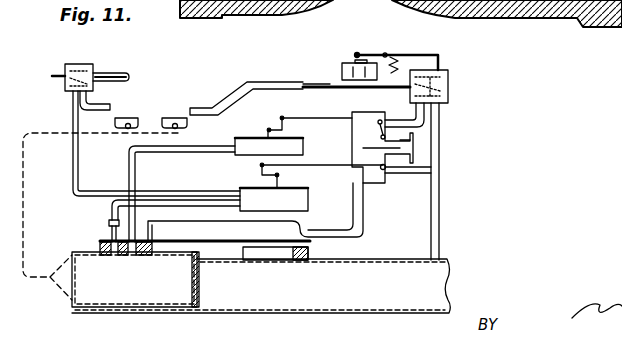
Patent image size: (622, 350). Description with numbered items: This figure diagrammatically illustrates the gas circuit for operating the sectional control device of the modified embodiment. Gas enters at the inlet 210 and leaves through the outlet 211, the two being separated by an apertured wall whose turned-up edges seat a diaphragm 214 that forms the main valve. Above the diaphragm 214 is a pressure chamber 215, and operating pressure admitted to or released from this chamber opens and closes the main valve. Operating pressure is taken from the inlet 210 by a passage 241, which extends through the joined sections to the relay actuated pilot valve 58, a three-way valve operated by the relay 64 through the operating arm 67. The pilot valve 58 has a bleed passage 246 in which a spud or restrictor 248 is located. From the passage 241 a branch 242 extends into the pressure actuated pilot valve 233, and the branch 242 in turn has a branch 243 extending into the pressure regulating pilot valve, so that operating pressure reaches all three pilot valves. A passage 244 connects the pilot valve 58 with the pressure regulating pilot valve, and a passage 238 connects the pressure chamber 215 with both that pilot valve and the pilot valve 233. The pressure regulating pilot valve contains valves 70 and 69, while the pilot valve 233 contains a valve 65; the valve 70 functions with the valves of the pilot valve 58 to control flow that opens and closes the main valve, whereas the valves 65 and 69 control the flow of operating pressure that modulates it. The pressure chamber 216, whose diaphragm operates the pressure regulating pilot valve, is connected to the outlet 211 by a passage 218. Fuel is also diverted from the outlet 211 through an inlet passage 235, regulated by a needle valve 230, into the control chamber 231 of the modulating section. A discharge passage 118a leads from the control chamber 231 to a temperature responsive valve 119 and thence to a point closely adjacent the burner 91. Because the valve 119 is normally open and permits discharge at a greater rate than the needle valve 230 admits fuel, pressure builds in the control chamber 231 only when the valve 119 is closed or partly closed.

The temperature responsive valve 119 is at (72, 64).
The burner 91 is at (170, 117).
The spud or restrictor 248 is at (303, 82).
The bleed passage 246 is at (327, 85).
The relay 64 is at (352, 62).
The operating arm 67 is at (403, 53).
The pilot valve 58 is at (455, 87).
The passage 244 is at (398, 118).
The passage 241 is at (441, 214).
The valve 70 is at (373, 114).
The branch 242 is at (356, 114).
The valve 69 is at (380, 128).
The pressure actuated pilot valve 233 is at (365, 150).
The branch 243 is at (413, 153).
The valve 65 is at (381, 176).
The pressure chamber 216 is at (251, 138).
The passage 218 is at (213, 146).
The control chamber 231 is at (243, 188).
The outlet passage 118a is at (157, 197).
The needle valve 230 is at (110, 218).
The inlet passage 235 is at (108, 227).
The diaphragm 214 is at (182, 245).
The passage 238 is at (335, 233).
The pressure chamber 215 is at (223, 232).
The outlet 211 is at (103, 290).
The inlet 210 is at (261, 286).